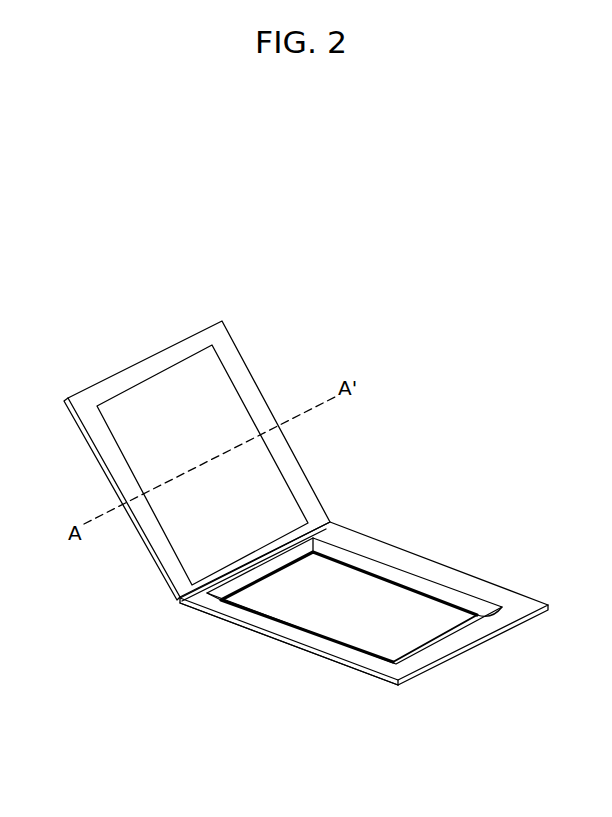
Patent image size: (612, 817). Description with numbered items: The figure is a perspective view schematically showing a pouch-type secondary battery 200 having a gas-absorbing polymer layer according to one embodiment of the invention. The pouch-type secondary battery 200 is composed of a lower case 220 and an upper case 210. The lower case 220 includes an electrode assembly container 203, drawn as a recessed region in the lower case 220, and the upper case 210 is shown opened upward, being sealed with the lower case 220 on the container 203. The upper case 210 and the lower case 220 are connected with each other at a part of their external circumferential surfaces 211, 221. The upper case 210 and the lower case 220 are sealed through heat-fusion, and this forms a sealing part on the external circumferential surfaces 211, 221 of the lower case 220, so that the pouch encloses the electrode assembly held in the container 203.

The pouch-type secondary battery 200 is at (108, 297).
The upper case 210 is at (76, 450).
The external circumferential surface 211 is at (287, 458).
The lower case 220 is at (512, 562).
The external circumferential surface 221 is at (456, 643).
The electrode assembly container 203 is at (255, 615).